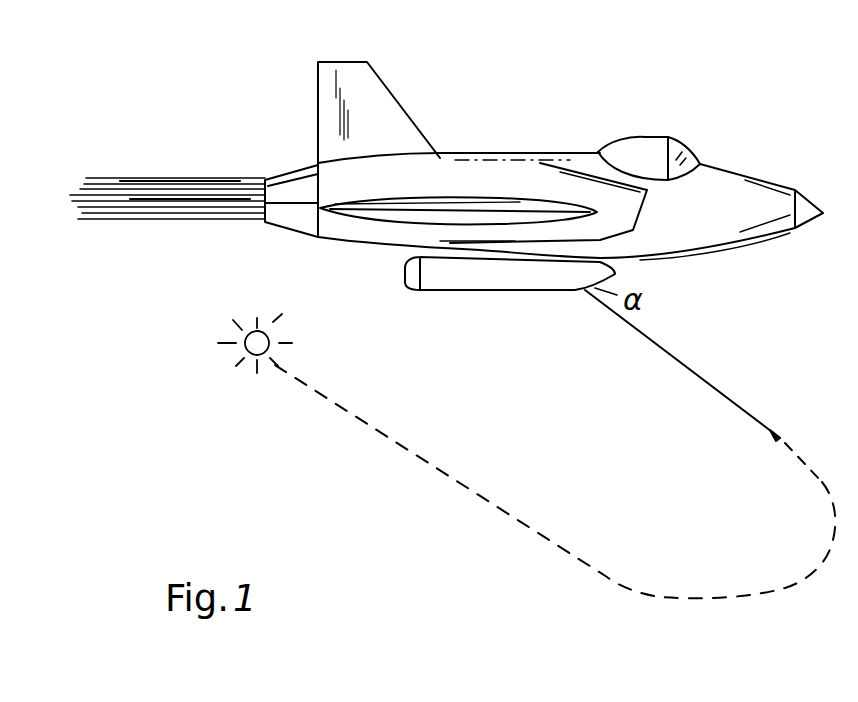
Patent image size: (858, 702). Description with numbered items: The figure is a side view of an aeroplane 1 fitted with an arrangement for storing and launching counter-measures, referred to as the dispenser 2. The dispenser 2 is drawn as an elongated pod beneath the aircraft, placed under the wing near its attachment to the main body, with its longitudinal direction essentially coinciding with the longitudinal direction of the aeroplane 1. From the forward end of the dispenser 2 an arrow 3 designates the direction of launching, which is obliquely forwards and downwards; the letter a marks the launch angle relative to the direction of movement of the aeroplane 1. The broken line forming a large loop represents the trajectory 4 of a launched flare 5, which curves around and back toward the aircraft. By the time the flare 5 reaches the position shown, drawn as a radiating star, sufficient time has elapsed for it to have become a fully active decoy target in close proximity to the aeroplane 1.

The aeroplane 1 is at (482, 155).
The dispenser 2 is at (450, 290).
The arrow 3 is at (683, 365).
The trajectory 4 is at (590, 551).
The counter-measure (flare) 5 is at (240, 350).